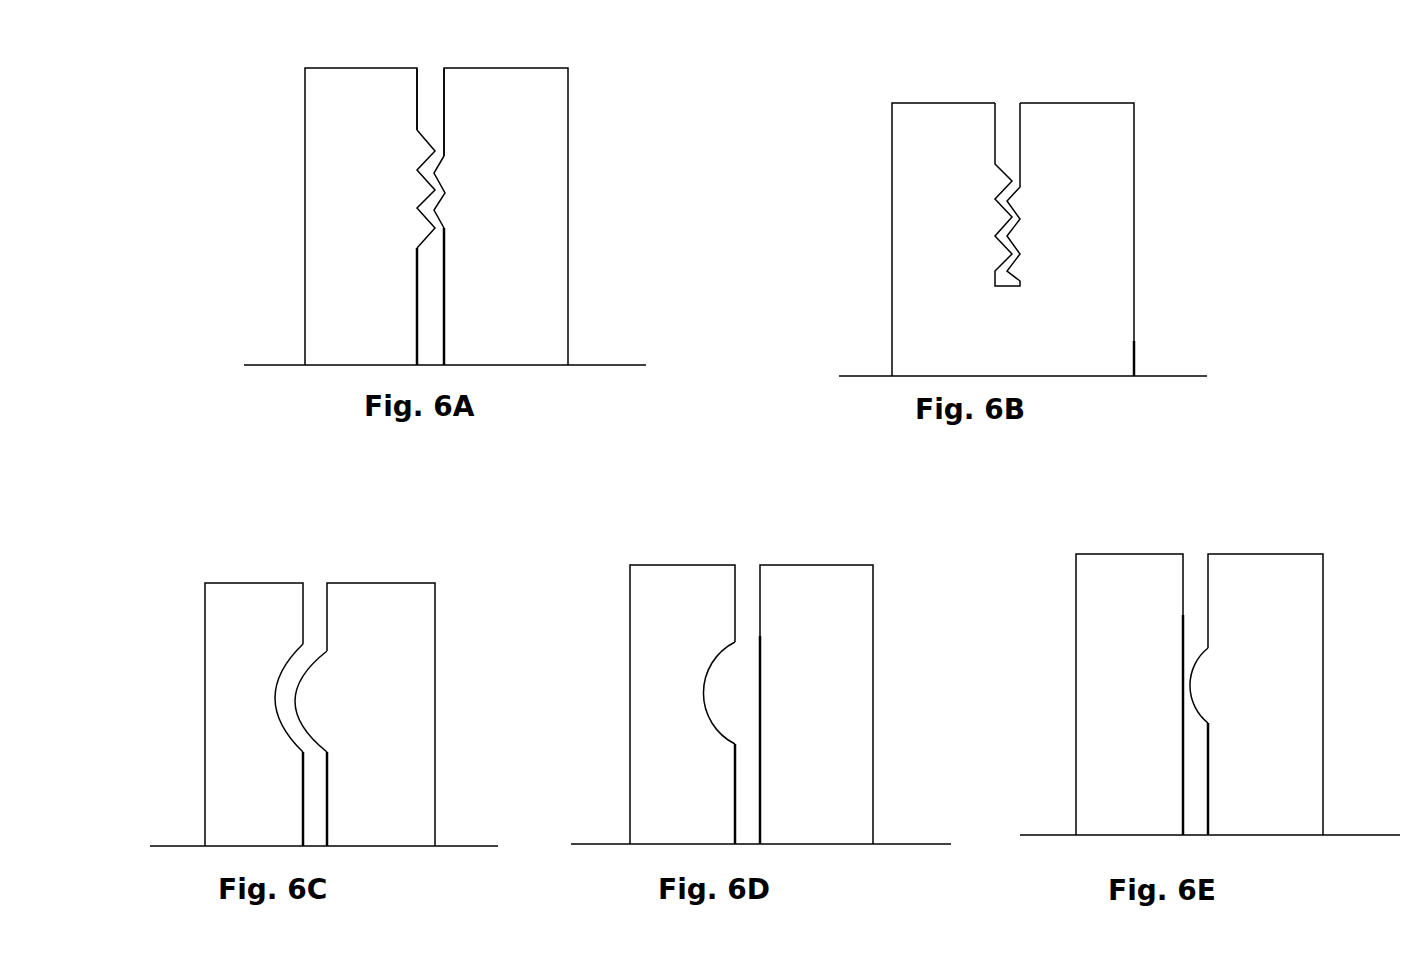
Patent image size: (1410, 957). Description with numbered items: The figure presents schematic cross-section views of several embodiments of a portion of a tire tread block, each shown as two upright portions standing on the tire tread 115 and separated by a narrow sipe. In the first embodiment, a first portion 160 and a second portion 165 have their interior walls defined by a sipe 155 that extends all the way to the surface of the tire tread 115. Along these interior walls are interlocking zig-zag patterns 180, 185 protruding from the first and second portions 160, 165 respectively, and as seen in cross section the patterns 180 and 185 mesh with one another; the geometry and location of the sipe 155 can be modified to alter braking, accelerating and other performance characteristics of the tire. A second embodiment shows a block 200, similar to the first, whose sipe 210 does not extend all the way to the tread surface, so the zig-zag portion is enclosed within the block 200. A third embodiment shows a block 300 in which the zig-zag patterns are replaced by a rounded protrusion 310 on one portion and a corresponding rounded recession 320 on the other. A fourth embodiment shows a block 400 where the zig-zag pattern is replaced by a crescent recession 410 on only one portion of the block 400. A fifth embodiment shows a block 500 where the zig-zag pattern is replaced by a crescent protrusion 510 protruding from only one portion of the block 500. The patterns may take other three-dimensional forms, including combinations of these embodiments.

In FIG. 6A, the tire tread 115 is at (263, 340).
In FIG. 6A, the sipe 155 is at (435, 120).
In FIG. 6A, the first portion 160 is at (407, 321).
In FIG. 6A, the second portion 165 is at (547, 298).
In FIG. 6A, the pattern 180 is at (405, 185).
In FIG. 6A, the pattern 185 is at (448, 172).
In FIG. 6B, the block 200 is at (1175, 117).
In FIG. 6B, the sipe 210 is at (1006, 127).
In FIG. 6C, the block 300 is at (395, 570).
In FIG. 6C, the rounded protrusion 310 is at (303, 695).
In FIG. 6C, the rounded recession 320 is at (272, 683).
In FIG. 6D, the block 400 is at (780, 552).
In FIG. 6D, the crescent recession 410 is at (695, 703).
In FIG. 6E, the block 500 is at (1177, 523).
In FIG. 6E, the crescent protrusion 510 is at (1210, 677).